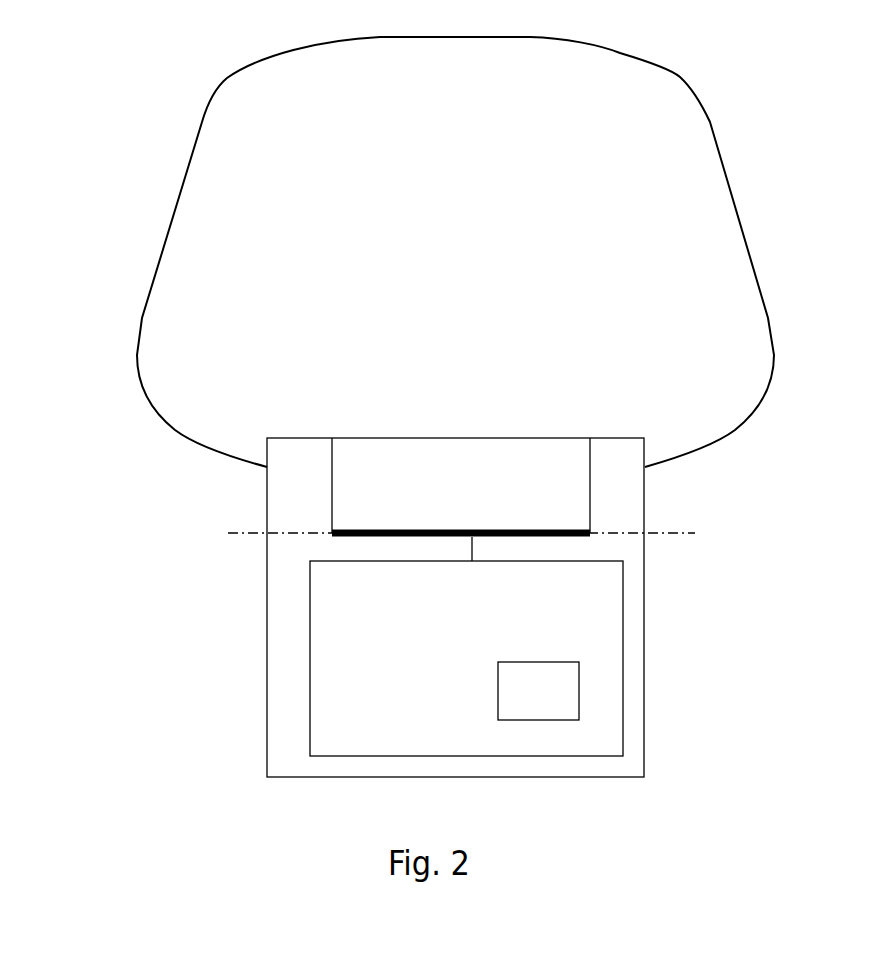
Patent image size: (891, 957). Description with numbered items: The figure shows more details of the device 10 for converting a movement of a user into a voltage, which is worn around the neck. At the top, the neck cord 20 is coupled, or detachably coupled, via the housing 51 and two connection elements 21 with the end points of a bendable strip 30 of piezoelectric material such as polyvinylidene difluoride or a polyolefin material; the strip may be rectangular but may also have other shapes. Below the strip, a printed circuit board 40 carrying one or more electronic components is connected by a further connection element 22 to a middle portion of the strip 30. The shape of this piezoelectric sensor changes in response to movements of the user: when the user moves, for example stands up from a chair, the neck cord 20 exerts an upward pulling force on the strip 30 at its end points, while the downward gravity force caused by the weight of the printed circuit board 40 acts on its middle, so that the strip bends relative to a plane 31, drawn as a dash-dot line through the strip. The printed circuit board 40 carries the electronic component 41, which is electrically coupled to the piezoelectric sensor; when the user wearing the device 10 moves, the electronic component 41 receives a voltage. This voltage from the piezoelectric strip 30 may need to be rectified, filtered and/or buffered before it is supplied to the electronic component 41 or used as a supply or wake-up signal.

The device 10 is at (182, 570).
The neck cord 20 is at (772, 327).
The connection elements 21 is at (328, 483).
The further connection element 22 is at (477, 547).
The bendable strip of piezoelectric material 30 is at (430, 530).
The plane 31 is at (258, 532).
The printed circuit board 40 is at (310, 712).
The electronic component 41 is at (552, 707).
The housing 51 is at (644, 627).